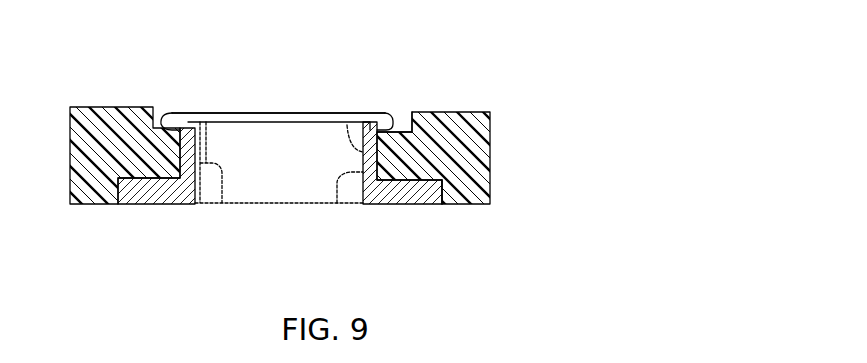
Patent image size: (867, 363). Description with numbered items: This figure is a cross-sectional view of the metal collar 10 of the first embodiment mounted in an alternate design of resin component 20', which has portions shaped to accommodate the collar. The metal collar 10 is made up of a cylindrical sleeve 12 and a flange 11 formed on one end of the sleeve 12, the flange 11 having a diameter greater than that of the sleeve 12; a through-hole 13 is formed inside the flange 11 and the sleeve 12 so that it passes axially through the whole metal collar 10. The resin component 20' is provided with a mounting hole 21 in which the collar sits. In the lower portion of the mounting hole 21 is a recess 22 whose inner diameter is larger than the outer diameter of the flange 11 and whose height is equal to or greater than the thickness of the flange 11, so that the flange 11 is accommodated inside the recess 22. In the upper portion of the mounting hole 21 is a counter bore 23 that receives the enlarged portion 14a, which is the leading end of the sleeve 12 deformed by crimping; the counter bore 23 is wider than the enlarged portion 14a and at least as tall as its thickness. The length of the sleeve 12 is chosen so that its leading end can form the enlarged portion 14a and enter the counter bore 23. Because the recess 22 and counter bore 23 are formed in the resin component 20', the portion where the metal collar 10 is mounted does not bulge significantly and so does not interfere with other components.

The metal collar 10 is at (163, 101).
The resin component 20' is at (295, 156).
The mounting hole 21 is at (346, 115).
The enlarged portion 14a is at (392, 113).
The counter bore 23 is at (404, 118).
The recess 22 is at (442, 190).
The through-hole 13 is at (222, 203).
The sleeve 12 is at (337, 203).
The flange 11 is at (396, 188).